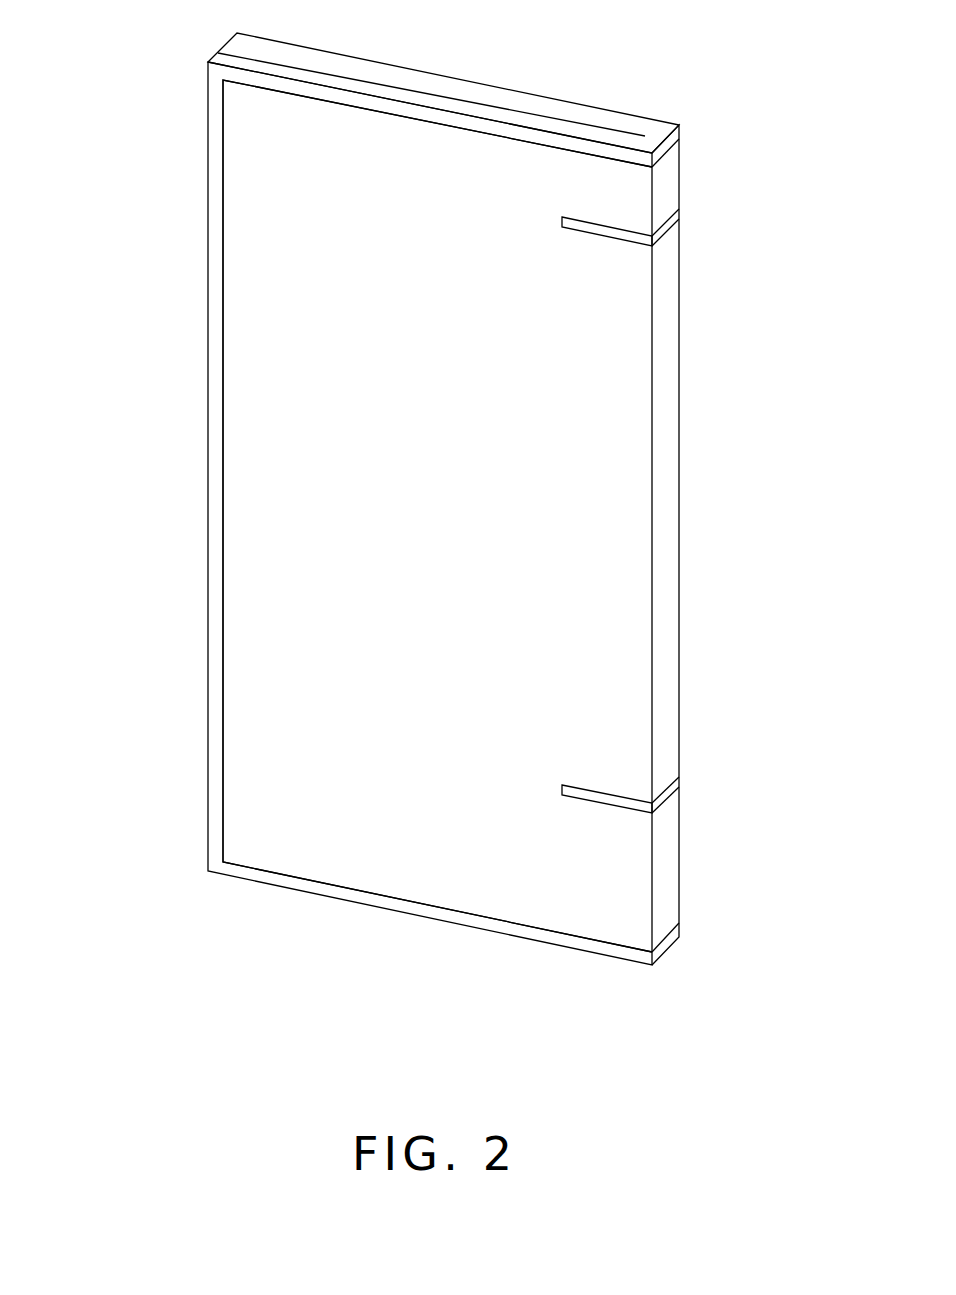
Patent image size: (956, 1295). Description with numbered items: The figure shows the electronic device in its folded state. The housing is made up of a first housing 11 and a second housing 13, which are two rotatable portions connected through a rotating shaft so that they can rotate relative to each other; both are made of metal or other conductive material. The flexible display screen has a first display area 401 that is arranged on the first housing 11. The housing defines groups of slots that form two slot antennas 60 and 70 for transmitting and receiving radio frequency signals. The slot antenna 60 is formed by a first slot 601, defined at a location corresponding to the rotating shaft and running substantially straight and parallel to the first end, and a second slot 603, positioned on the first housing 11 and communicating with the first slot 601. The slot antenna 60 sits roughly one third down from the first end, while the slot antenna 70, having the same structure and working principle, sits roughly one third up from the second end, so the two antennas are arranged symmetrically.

The first housing 11 is at (232, 59).
The second housing 13 is at (307, 53).
The first display area 401 is at (250, 360).
The slot antenna 60 is at (661, 243).
The first slot 601 is at (672, 220).
The second slot 603 is at (603, 230).
The slot antenna 70 is at (627, 783).